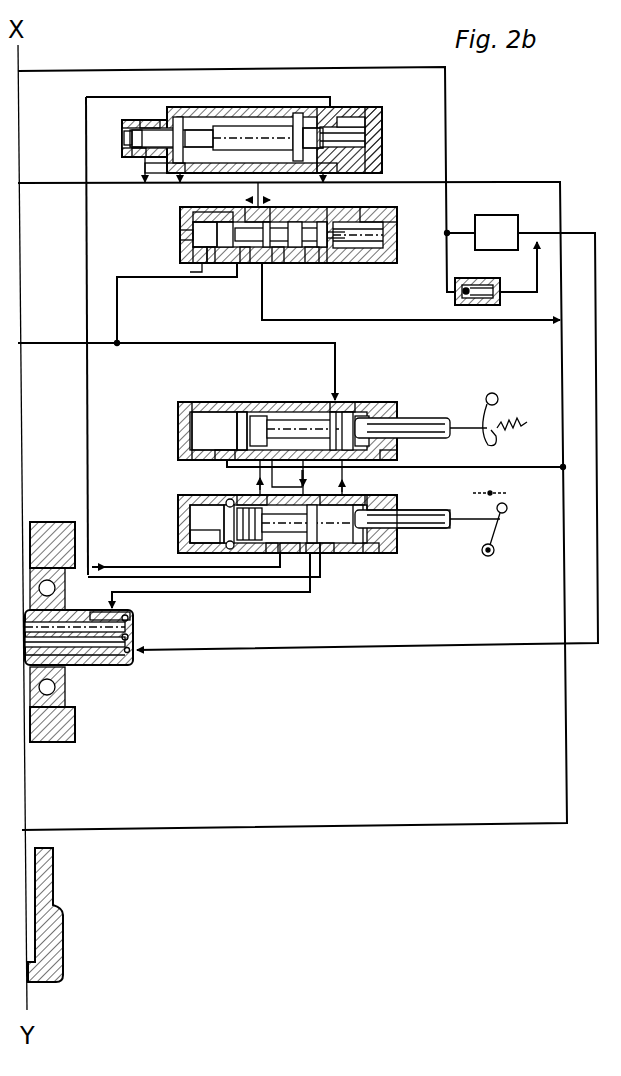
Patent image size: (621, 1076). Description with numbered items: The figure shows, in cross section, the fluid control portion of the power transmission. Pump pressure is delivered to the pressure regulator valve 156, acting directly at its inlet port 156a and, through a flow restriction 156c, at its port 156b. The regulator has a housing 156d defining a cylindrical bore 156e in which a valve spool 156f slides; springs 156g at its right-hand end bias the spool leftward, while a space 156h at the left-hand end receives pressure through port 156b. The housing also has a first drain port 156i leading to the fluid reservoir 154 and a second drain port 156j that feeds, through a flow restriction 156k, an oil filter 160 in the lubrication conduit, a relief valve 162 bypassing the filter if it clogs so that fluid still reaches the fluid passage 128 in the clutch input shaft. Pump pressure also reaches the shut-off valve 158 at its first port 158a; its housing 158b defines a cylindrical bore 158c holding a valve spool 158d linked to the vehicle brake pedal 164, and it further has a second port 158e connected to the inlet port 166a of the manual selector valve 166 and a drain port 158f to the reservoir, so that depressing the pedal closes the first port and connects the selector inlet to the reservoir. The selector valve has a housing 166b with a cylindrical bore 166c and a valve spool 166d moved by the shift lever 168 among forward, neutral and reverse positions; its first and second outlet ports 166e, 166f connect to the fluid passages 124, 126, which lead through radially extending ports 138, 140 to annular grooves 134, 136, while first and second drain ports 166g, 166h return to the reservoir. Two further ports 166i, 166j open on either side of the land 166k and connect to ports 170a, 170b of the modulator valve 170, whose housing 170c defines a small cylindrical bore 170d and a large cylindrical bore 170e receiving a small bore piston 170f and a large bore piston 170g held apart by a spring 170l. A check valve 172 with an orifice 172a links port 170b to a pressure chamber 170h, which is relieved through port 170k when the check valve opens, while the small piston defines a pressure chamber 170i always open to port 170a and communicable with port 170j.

The modulator valve 170 is at (250, 97).
The port 170a is at (118, 133).
The port 170b is at (372, 113).
The housing 170c is at (120, 137).
The small cylindrical bore 170d is at (150, 118).
The large cylindrical bore 170e is at (228, 107).
The small bore piston 170f is at (140, 122).
The large bore piston 170g is at (292, 107).
The pressure chamber 170h is at (313, 125).
The pressure chamber 170i is at (138, 152).
The port 170j is at (148, 165).
The port 170k is at (325, 178).
The spring 170l is at (200, 128).
The check valve 172 is at (358, 105).
The orifice 172a is at (370, 137).
The pressure regulator valve 156 is at (182, 243).
The inlet port 156a is at (245, 263).
The port 156b is at (197, 263).
The flow restriction 156c is at (208, 263).
The housing 156d is at (190, 238).
The cylindrical bore 156e is at (200, 258).
The valve spool 156f is at (312, 263).
The springs 156g is at (372, 240).
The space 156h is at (202, 228).
The first drain port 156i is at (278, 263).
The second drain port 156j is at (252, 212).
The flow restriction 156k is at (378, 207).
The oil filter 160 is at (500, 207).
The relief valve 162 is at (470, 305).
The shut-off valve 158 is at (176, 428).
The first port 158a is at (337, 403).
The housing 158b is at (178, 404).
The cylindrical bore 158c is at (212, 420).
The valve spool 158d is at (245, 412).
The second port 158e is at (392, 459).
The drain port 158f is at (225, 458).
The vehicle brake pedal 164 is at (500, 438).
The manual selector valve 166 is at (388, 556).
The inlet port 166a is at (345, 490).
The housing 166b is at (196, 514).
The cylindrical bore 166c is at (206, 536).
The valve spool 166d is at (408, 525).
The first outlet port 166e is at (326, 553).
The second outlet port 166f is at (272, 555).
The first drain port 166g is at (390, 501).
The second drain port 166h is at (256, 483).
The port 166i is at (318, 560).
The port 166j is at (300, 560).
The land 166k is at (374, 560).
The shift lever 168 is at (495, 535).
The fluid passage 124 is at (115, 640).
The fluid passage 126 is at (115, 614).
The fluid passage 128 is at (118, 654).
The annular groove 134 is at (85, 668).
The annular groove 136 is at (112, 663).
The radially extending port 138 is at (104, 667).
The radially extending port 140 is at (128, 622).
The fluid reservoir 154 is at (58, 935).